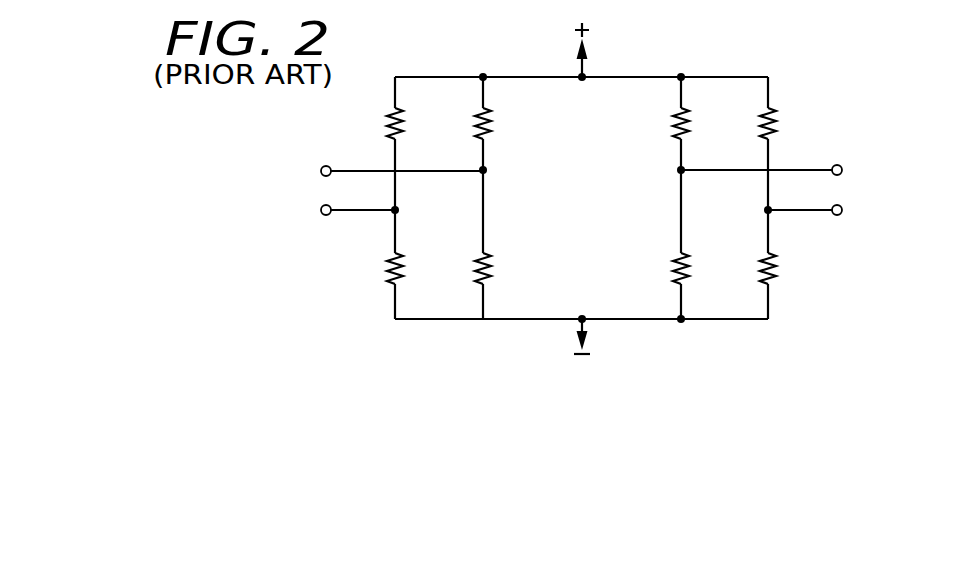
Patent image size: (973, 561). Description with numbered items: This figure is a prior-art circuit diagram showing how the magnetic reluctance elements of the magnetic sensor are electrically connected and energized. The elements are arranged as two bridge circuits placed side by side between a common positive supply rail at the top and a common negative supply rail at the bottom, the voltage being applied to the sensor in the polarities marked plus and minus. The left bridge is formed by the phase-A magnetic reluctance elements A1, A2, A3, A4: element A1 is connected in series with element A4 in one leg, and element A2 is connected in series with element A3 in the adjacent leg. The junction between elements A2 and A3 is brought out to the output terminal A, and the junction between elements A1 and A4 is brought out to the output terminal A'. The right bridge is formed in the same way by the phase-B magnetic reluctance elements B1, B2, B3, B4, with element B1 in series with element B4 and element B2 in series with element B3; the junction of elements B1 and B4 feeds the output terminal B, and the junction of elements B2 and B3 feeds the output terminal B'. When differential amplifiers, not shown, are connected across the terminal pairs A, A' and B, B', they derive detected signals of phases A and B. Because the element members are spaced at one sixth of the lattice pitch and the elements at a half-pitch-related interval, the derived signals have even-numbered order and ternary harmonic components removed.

The magnetic reluctance element A1 is at (404, 126).
The magnetic reluctance element A2 is at (492, 126).
The magnetic reluctance element A3 is at (492, 271).
The magnetic reluctance element A4 is at (404, 271).
The magnetic reluctance element B1 is at (672, 126).
The magnetic reluctance element B2 is at (777, 126).
The magnetic reluctance element B3 is at (777, 271).
The magnetic reluctance element B4 is at (672, 271).
The output terminal A is at (399, 149).
The output terminal A' is at (355, 235).
The output terminal B is at (783, 171).
The output terminal B' is at (830, 210).